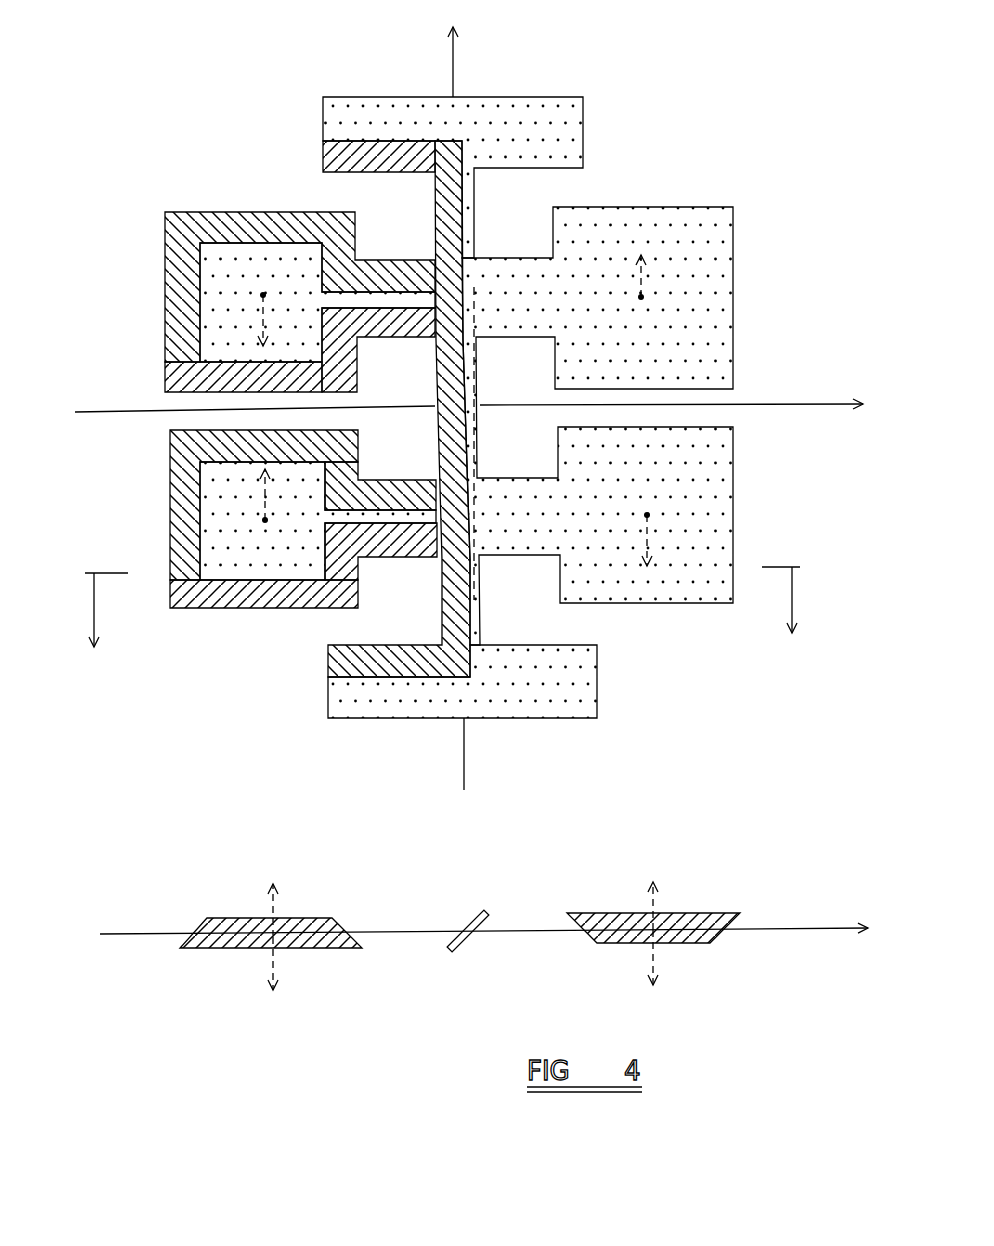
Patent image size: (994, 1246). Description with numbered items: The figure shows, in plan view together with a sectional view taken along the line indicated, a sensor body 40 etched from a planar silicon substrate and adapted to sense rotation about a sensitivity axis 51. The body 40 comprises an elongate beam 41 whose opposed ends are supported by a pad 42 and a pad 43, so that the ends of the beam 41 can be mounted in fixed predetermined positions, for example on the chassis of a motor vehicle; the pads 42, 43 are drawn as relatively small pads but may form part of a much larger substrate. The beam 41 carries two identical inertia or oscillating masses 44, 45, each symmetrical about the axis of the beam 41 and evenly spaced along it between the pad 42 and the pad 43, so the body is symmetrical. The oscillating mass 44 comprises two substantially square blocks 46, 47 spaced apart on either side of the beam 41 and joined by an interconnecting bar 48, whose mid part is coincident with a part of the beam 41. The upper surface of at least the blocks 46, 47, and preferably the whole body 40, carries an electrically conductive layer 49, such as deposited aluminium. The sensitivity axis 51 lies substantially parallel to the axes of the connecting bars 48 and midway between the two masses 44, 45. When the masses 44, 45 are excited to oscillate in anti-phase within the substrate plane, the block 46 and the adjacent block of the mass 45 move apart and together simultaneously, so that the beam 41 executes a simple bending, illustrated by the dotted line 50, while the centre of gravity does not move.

The sensor body 40 is at (707, 160).
The elongate beam 41 is at (478, 590).
The pad 42 is at (380, 698).
The pad 43 is at (533, 113).
The oscillating mass 44 is at (148, 306).
The oscillating mass 45 is at (145, 527).
The square block 46 is at (714, 253).
The square block 47 is at (257, 263).
The interconnecting bar 48 is at (392, 260).
The electrically conductive layer 49 is at (563, 125).
The dotted line 50 is at (473, 250).
The sensitivity axis 51 is at (100, 412).